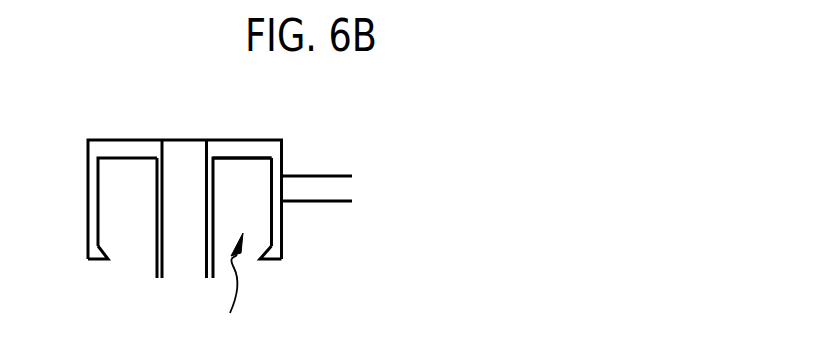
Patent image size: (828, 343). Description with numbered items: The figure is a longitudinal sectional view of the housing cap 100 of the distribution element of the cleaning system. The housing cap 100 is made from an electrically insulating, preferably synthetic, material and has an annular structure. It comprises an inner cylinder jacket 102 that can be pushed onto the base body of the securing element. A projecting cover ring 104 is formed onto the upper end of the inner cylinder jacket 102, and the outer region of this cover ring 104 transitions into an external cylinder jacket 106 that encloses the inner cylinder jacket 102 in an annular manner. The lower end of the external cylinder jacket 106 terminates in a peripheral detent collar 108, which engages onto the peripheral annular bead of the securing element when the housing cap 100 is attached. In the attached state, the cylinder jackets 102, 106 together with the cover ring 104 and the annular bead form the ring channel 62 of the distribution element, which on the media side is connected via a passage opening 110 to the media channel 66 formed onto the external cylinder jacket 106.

The housing cap 100 is at (272, 150).
The projecting cover ring 104 is at (223, 152).
The inner cylinder jacket 102 is at (157, 260).
The passage opening 110 is at (282, 188).
The media channel 66 is at (337, 190).
The external cylinder jacket 106 is at (283, 228).
The peripheral detent collar 108 is at (270, 257).
The ring channel 62 is at (226, 288).